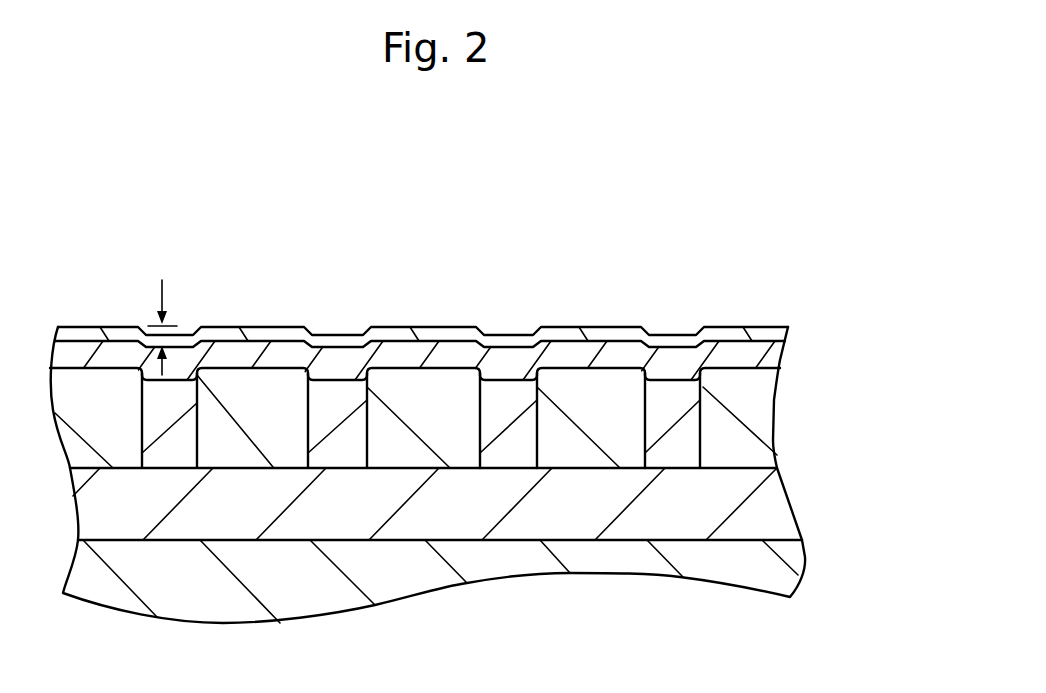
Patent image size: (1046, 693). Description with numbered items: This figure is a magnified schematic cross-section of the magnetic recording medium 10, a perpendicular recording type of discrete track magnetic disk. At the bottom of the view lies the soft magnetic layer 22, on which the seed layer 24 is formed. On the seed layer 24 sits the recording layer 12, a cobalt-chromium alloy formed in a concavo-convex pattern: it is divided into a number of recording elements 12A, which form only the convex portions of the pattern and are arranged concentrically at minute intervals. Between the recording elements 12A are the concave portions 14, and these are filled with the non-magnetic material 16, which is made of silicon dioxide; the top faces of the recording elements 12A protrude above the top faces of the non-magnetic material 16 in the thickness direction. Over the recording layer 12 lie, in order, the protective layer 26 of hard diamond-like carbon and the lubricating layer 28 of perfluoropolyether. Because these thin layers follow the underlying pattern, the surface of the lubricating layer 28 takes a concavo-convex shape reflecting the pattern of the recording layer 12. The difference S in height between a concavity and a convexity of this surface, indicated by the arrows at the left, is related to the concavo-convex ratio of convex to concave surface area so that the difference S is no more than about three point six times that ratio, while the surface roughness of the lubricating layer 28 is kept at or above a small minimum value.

The magnetic recording medium 10 is at (434, 184).
The recording layer 12 is at (796, 430).
The recording elements 12A is at (592, 387).
The concave portions 14 is at (522, 353).
The non-magnetic material 16 is at (510, 380).
The soft magnetic layer 22 is at (803, 565).
The seed layer 24 is at (795, 508).
The protective layer 26 is at (777, 358).
The lubricating layer 28 is at (788, 333).
The difference in height S is at (162, 332).